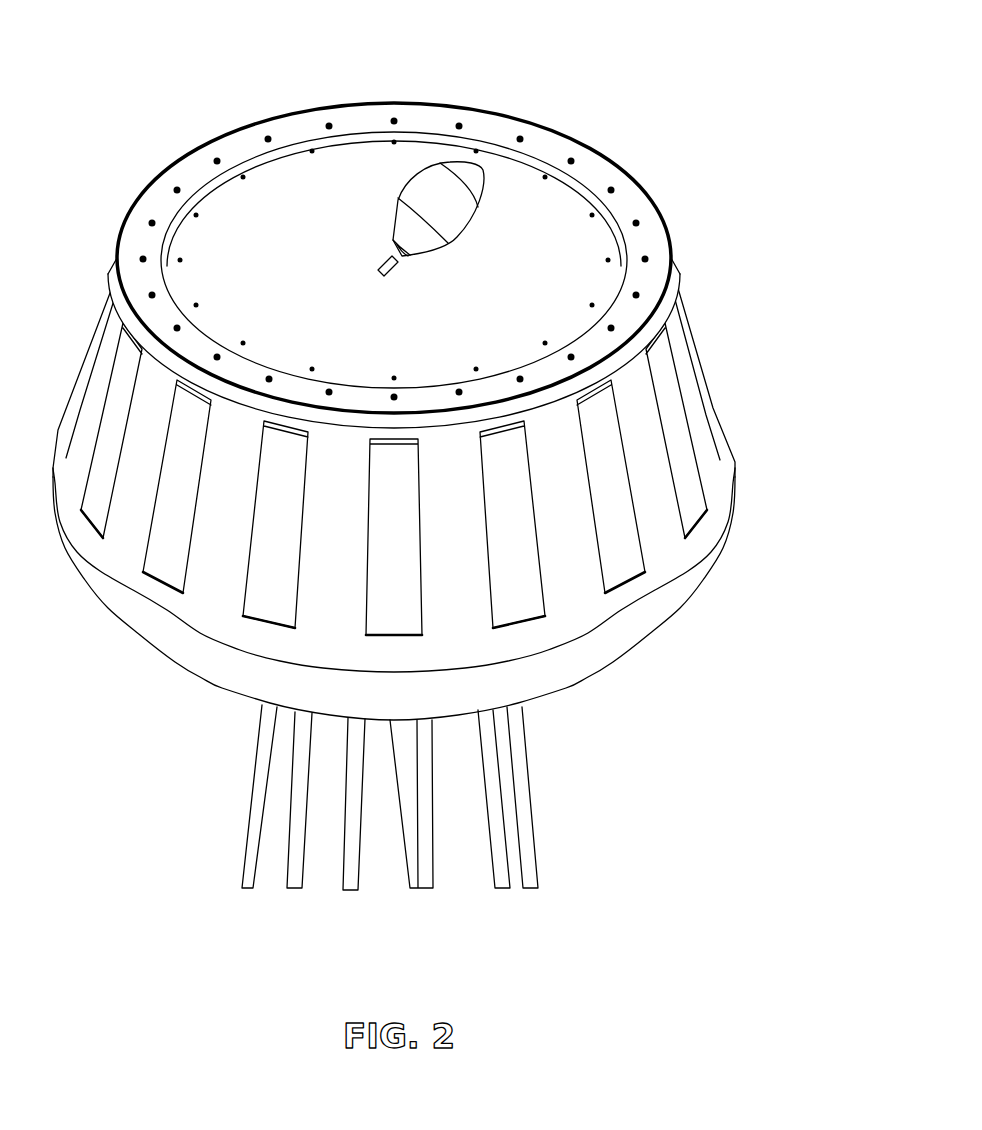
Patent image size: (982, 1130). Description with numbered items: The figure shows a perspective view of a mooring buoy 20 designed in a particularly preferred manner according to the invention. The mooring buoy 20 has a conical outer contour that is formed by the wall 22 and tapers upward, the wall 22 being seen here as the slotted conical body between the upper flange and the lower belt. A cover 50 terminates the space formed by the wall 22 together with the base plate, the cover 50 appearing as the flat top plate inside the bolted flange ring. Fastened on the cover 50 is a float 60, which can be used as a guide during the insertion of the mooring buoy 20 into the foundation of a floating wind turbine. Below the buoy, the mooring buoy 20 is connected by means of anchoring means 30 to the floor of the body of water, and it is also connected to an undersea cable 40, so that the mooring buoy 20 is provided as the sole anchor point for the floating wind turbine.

The mooring buoy 20 is at (62, 158).
The wall 22 is at (688, 398).
The anchoring means 30 is at (253, 803).
The undersea cable 40 is at (407, 793).
The cover 50 is at (302, 271).
The float 60 is at (443, 207).